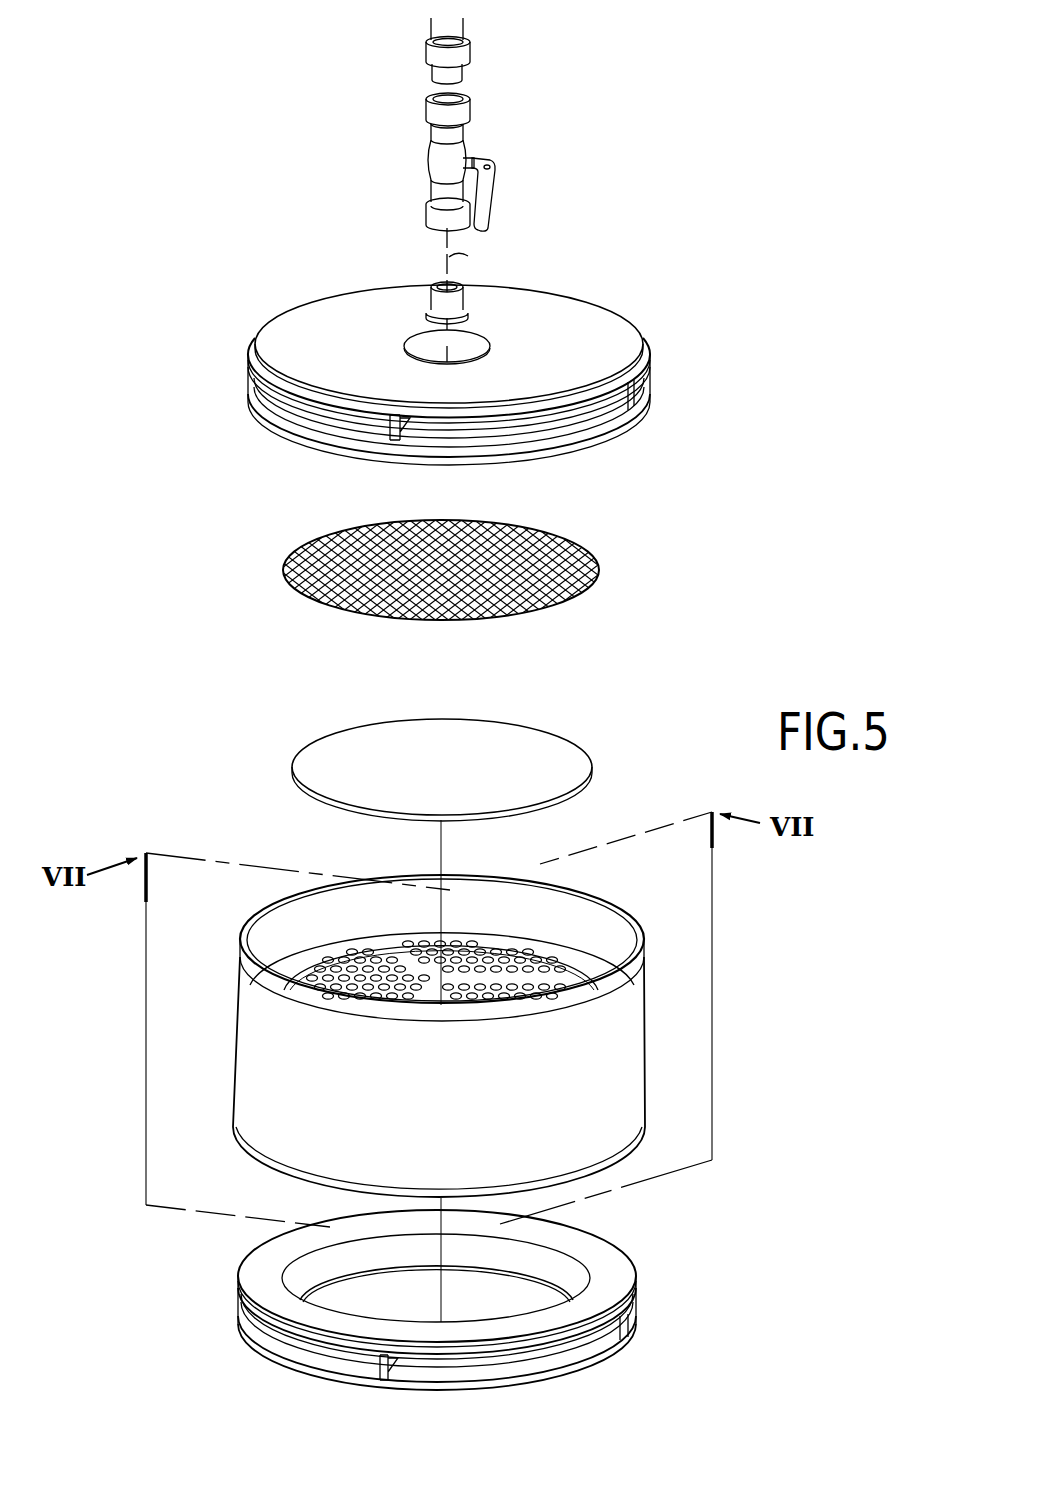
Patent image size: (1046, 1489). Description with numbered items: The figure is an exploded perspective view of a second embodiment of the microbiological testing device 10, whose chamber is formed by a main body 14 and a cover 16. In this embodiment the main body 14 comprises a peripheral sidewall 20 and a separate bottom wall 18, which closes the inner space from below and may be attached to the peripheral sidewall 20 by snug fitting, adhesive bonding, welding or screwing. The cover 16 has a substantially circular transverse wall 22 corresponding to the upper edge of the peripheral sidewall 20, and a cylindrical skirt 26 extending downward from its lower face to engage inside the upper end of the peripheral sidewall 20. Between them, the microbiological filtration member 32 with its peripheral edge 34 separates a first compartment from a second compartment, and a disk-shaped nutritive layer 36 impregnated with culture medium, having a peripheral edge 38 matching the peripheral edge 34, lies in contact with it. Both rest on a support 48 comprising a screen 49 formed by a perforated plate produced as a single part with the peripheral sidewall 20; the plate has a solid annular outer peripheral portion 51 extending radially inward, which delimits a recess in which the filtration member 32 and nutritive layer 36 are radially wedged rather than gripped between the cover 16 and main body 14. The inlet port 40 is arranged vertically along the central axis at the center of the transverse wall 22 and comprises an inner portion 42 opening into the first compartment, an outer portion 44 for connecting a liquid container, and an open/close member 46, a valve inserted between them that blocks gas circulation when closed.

The microbiological testing device 10 is at (126, 305).
The main body 14 is at (718, 1207).
The cover 16 is at (657, 322).
The bottom wall 18 is at (618, 1352).
The peripheral sidewall 20 is at (608, 1150).
The transverse wall 22 is at (545, 316).
The cylindrical skirt 26 is at (610, 442).
The microbiological filtration member 32 is at (600, 552).
The peripheral edge 34 is at (595, 584).
The nutritive layer 36 is at (596, 737).
The peripheral edge 38 is at (584, 790).
The inlet port 40 is at (309, 25).
The inner portion 42 is at (426, 300).
The outer portion 44 is at (413, 58).
The open/close member 46 is at (414, 157).
The support 48 is at (432, 984).
The screen 49 is at (441, 940).
The outer peripheral portion 51 is at (595, 955).